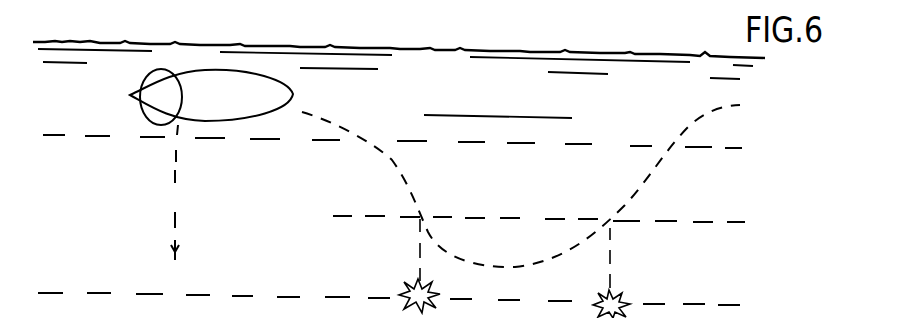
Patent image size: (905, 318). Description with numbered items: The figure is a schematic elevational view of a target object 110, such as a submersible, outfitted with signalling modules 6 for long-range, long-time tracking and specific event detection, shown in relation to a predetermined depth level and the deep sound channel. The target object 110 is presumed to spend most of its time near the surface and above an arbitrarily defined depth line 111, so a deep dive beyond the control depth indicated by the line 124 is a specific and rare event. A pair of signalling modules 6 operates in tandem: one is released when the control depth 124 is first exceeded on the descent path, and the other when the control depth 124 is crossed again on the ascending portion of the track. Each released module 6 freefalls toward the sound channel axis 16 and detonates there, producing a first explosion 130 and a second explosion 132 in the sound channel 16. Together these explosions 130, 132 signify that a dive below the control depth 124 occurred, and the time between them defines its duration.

The target object 110 is at (300, 88).
The signalling module 6 is at (175, 202).
The arbitrarily defined depth line 111 is at (411, 147).
The control depth line 124 is at (560, 225).
The sound channel axis 16 is at (405, 305).
The first explosion 130 is at (408, 292).
The second explosion 132 is at (629, 298).